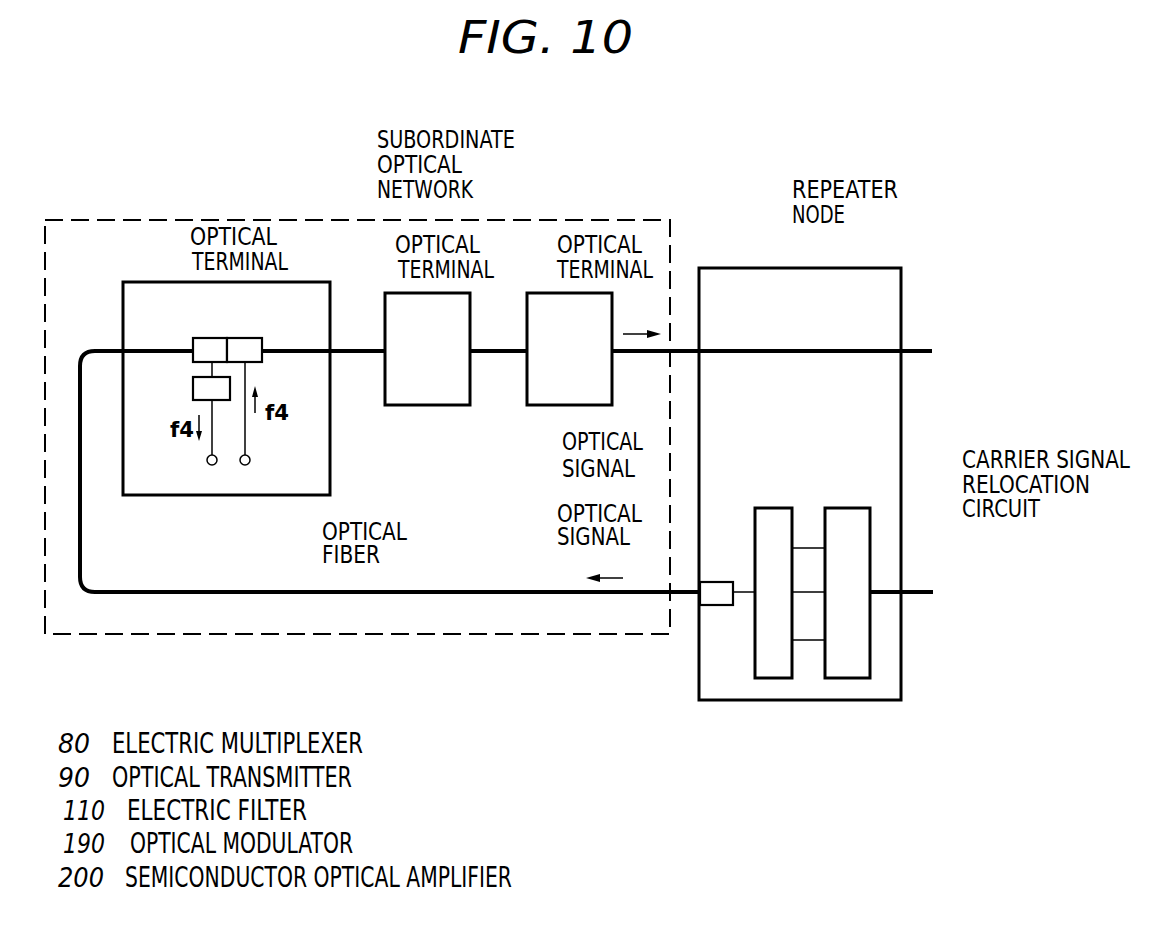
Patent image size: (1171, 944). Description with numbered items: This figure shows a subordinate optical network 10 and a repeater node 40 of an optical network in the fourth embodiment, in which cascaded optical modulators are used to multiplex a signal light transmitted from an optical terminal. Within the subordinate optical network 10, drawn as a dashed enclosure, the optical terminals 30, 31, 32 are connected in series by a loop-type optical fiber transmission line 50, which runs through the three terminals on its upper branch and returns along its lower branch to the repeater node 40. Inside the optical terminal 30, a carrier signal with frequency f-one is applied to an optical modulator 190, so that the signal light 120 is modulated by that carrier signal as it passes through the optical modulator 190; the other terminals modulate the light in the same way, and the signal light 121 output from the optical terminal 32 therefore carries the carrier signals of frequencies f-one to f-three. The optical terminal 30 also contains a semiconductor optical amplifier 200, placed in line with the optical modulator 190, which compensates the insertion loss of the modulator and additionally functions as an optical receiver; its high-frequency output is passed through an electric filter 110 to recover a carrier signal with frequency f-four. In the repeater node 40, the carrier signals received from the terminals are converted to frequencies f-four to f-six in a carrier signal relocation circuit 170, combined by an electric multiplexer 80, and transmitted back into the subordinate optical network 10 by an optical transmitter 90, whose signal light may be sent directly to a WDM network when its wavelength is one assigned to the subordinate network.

The subordinate optical network 10 is at (340, 220).
The optical terminal 30 is at (158, 282).
The optical terminal 31 is at (403, 300).
The optical terminal 32 is at (548, 300).
The repeater node 40 is at (752, 268).
The optical fiber transmission line 50 is at (302, 590).
The electric multiplexer 80 is at (773, 508).
The optical transmitter 90 is at (713, 582).
The electric filter 110 is at (193, 388).
The signal light 120 is at (606, 577).
The signal light 121 is at (633, 337).
The carrier signal relocation circuit 170 is at (872, 510).
The optical modulator 190 is at (250, 338).
The semiconductor optical amplifier 200 is at (205, 338).